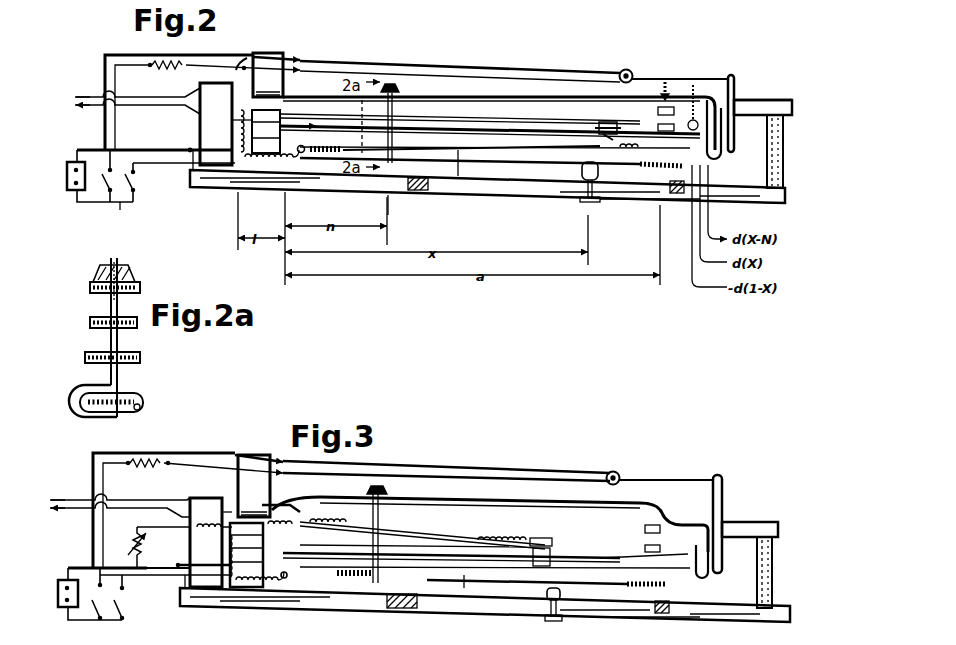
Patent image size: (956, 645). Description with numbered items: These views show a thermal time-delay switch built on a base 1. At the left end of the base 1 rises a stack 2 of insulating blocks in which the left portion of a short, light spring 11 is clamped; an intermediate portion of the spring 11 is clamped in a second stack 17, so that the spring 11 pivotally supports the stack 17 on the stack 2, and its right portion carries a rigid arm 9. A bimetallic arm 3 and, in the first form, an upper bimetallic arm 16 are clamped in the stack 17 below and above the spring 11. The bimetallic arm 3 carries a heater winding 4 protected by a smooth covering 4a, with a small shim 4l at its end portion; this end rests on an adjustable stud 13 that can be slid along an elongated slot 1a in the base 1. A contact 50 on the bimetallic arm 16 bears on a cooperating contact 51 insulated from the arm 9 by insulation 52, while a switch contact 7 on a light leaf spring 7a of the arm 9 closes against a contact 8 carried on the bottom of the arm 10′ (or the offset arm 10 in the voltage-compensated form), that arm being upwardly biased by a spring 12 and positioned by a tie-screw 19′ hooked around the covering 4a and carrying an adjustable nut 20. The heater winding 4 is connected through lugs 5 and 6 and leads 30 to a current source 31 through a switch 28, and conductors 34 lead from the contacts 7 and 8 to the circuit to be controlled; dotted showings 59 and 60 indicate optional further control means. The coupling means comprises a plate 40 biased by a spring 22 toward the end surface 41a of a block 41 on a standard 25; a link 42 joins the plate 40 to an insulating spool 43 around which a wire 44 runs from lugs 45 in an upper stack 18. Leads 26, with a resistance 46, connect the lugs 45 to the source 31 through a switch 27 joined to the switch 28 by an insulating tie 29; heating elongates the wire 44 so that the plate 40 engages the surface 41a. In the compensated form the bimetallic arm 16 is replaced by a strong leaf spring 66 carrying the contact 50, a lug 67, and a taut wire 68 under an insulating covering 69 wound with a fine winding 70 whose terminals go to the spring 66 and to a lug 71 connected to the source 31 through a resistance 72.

In FIG. 2, the base 1 is at (216, 188).
In FIG. 2, the elongated slot 1a is at (432, 190).
In FIG. 2, the stack of insulating blocks 2 is at (226, 124).
In FIG. 3, the stack of insulating blocks 2 is at (203, 498).
In FIG. 2, the bimetallic arm 3 is at (303, 153).
In FIG. 2A, the bimetallic arm 3 is at (141, 410).
In FIG. 3, the bimetallic arm 3 is at (284, 580).
In FIG. 2, the heater winding 4 is at (344, 153).
In FIG. 2A, the heater winding 4 is at (143, 398).
In FIG. 3, the heater winding 4 is at (362, 585).
In FIG. 2, the covering 4a is at (540, 186).
In FIG. 3, the covering 4a is at (445, 595).
In FIG. 2, the shim 4l is at (655, 168).
In FIG. 2, the lug 5 is at (193, 170).
In FIG. 3, the lug 5 is at (183, 590).
In FIG. 2, the lug 6 is at (196, 150).
In FIG. 3, the lug 6 is at (185, 565).
In FIG. 2, the switch contact 7 is at (658, 127).
In FIG. 3, the switch contact 7 is at (645, 549).
In FIG. 2, the leaf spring 7a is at (639, 146).
In FIG. 3, the leaf spring 7a is at (620, 556).
In FIG. 2, the switch contact 8 is at (658, 112).
In FIG. 3, the switch contact 8 is at (645, 532).
In FIG. 2, the arm 9 is at (460, 160).
In FIG. 2A, the arm 9 is at (140, 358).
In FIG. 3, the arm 9 is at (465, 590).
In FIG. 2A, the arm 10 is at (140, 288).
In FIG. 3, the arm 10 is at (482, 497).
In FIG. 2, the arm 10′ is at (496, 100).
In FIG. 2, the spring 11 is at (266, 131).
In FIG. 2, the spring 12 is at (236, 81).
In FIG. 3, the spring 12 is at (234, 500).
In FIG. 2, the stud 13 is at (598, 203).
In FIG. 3, the stud 13 is at (548, 605).
In FIG. 2, the bimetallic arm 16 is at (514, 118).
In FIG. 2A, the bimetallic arm 16 is at (90, 323).
In FIG. 2, the stack 17 is at (280, 111).
In FIG. 3, the stack 17 is at (268, 556).
In FIG. 2, the upper stack 18 is at (284, 55).
In FIG. 3, the upper stack 18 is at (254, 486).
In FIG. 2, the tie-screw 19′ is at (394, 107).
In FIG. 2A, the tie-screw 19′ is at (110, 312).
In FIG. 3, the tie-screw 19′ is at (380, 496).
In FIG. 2, the adjustable nut 20 is at (400, 84).
In FIG. 2A, the adjustable nut 20 is at (135, 272).
In FIG. 3, the adjustable nut 20 is at (387, 488).
In FIG. 2, the spring 22 is at (722, 158).
In FIG. 3, the spring 22 is at (710, 578).
In FIG. 2, the standard 25 is at (784, 158).
In FIG. 3, the standard 25 is at (772, 572).
In FIG. 2, the leads 26 is at (133, 57).
In FIG. 2, the switch 27 is at (105, 185).
In FIG. 3, the switch 27 is at (96, 604).
In FIG. 2, the switch 28 is at (137, 185).
In FIG. 3, the switch 28 is at (135, 610).
In FIG. 2, the insulating tie 29 is at (123, 204).
In FIG. 2, the leads 30 is at (163, 150).
In FIG. 2, the current source 31 is at (66, 180).
In FIG. 3, the current source 31 is at (58, 596).
In FIG. 2, the conductors 34 is at (133, 95).
In FIG. 3, the conductors 34 is at (108, 504).
In FIG. 2, the plate 40 is at (734, 76).
In FIG. 3, the plate 40 is at (722, 477).
In FIG. 2, the block 41 is at (790, 100).
In FIG. 3, the block 41 is at (770, 522).
In FIG. 2, the end surface 41a is at (740, 102).
In FIG. 2, the link 42 is at (668, 77).
In FIG. 2, the spool 43 is at (626, 69).
In FIG. 3, the spool 43 is at (614, 471).
In FIG. 2, the wire 44 is at (468, 76).
In FIG. 3, the wire 44 is at (432, 478).
In FIG. 2, the lugs 45 is at (248, 58).
In FIG. 2, the resistance 46 is at (164, 67).
In FIG. 3, the resistance 46 is at (146, 467).
In FIG. 2, the contact 50 is at (603, 122).
In FIG. 3, the contact 50 is at (550, 556).
In FIG. 2, the cooperating contact 51 is at (620, 120).
In FIG. 2, the insulation 52 is at (582, 142).
In FIG. 2, the control means 59 is at (696, 98).
In FIG. 2, the control means 60 is at (660, 88).
In FIG. 3, the leaf spring 66 is at (336, 548).
In FIG. 3, the lug 67 is at (286, 526).
In FIG. 3, the wire 68 is at (530, 540).
In FIG. 3, the insulating covering 69 is at (395, 530).
In FIG. 3, the winding 70 is at (336, 523).
In FIG. 3, the lug 71 is at (275, 505).
In FIG. 3, the resistance 72 is at (151, 547).